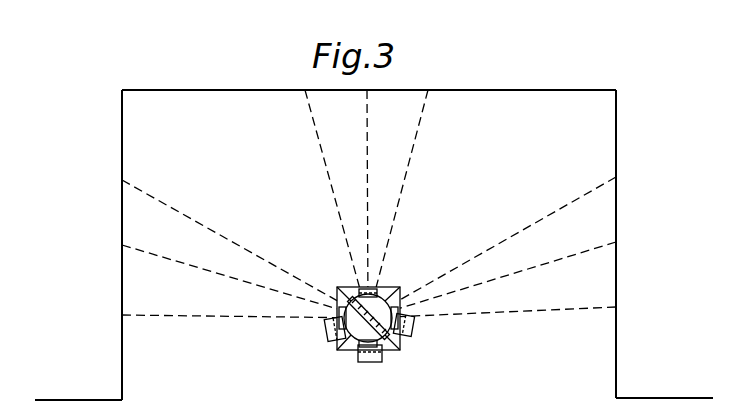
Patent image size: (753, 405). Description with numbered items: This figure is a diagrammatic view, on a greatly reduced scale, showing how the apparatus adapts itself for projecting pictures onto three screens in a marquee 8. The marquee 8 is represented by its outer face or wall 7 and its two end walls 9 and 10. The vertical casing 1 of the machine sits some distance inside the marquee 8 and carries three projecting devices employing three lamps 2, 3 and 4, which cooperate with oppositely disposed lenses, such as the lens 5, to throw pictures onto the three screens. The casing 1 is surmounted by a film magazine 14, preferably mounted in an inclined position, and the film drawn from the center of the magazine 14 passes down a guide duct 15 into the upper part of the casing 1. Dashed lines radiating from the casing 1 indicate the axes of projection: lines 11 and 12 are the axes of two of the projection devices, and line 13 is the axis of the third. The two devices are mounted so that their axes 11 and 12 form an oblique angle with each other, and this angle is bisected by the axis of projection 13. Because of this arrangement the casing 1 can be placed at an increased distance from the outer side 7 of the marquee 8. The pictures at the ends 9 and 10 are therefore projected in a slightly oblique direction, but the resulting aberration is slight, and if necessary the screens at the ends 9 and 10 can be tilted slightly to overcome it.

The vertical casing 1 is at (346, 353).
The lamp 2 is at (412, 324).
The lamp 3 is at (370, 360).
The lamp 4 is at (328, 335).
The lens 5 is at (378, 291).
The outer face of marquee 7 is at (474, 90).
The marquee 8 is at (592, 128).
The end wall of marquee 9 is at (122, 153).
The end wall of marquee 10 is at (617, 160).
The axis of projection 11 is at (225, 272).
The axis of projection 12 is at (497, 282).
The axis of projection 13 is at (368, 152).
The film magazine 14 is at (390, 340).
The guide duct 15 is at (364, 294).